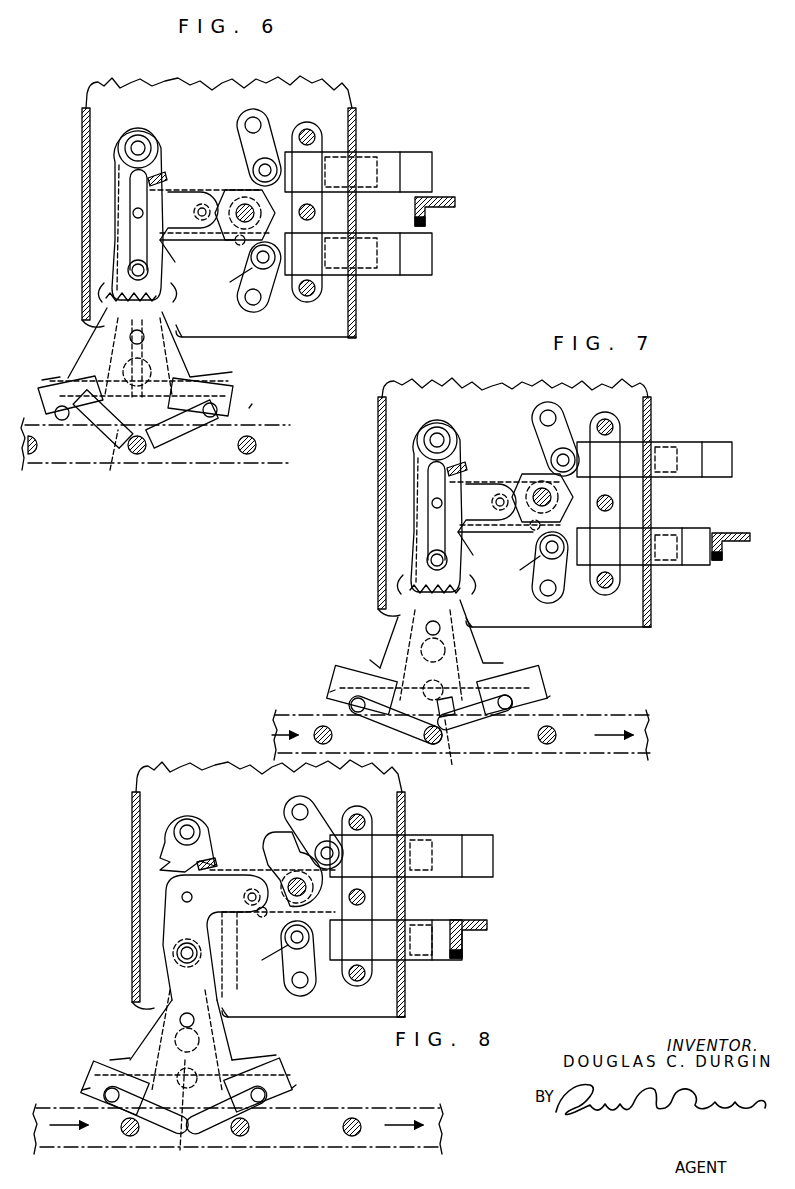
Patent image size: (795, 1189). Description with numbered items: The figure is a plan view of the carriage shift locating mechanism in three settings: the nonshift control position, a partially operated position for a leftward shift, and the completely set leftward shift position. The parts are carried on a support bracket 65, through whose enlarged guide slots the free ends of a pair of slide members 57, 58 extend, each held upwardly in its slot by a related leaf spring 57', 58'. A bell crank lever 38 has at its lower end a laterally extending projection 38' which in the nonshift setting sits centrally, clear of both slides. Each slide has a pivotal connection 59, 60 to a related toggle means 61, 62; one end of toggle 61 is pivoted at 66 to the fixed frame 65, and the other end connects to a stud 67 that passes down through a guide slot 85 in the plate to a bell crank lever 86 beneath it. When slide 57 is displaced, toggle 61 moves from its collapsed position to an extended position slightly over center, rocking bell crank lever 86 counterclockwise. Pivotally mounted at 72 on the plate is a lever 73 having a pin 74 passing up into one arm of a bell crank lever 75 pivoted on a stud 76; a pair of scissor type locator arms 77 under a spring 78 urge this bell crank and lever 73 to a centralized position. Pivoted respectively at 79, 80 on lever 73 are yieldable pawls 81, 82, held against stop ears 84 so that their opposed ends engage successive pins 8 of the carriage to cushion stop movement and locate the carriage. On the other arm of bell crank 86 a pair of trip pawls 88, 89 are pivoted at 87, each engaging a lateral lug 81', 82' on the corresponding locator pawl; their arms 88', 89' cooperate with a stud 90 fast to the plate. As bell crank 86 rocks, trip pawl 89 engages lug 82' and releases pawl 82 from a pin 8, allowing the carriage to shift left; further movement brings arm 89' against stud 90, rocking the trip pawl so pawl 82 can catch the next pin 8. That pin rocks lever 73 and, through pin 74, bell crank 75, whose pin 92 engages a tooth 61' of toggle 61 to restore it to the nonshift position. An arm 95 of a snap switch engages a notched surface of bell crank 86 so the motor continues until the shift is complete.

In FIG. 6, the support bracket 65 is at (340, 75).
In FIG. 7, the support bracket 65 is at (648, 368).
In FIG. 8, the support bracket 65 is at (165, 768).
In FIG. 6, the arm 95 is at (318, 212).
In FIG. 7, the arm 95 is at (614, 503).
In FIG. 8, the arm 95 is at (367, 896).
In FIG. 6, the slide member 58 is at (368, 159).
In FIG. 7, the slide member 58 is at (665, 444).
In FIG. 8, the slide member 58 is at (411, 842).
In FIG. 6, the leaf spring 58' is at (359, 156).
In FIG. 7, the leaf spring 58' is at (671, 442).
In FIG. 8, the leaf spring 58' is at (425, 839).
In FIG. 6, the slide member 57 is at (364, 268).
In FIG. 7, the slide member 57 is at (659, 560).
In FIG. 8, the slide member 57 is at (407, 954).
In FIG. 6, the leaf spring 57' is at (358, 271).
In FIG. 7, the leaf spring 57' is at (669, 562).
In FIG. 8, the leaf spring 57' is at (422, 957).
In FIG. 6, the bell crank lever 38 is at (445, 194).
In FIG. 7, the bell crank lever 38 is at (744, 538).
In FIG. 8, the bell crank lever 38 is at (490, 939).
In FIG. 6, the laterally extending projection 38' is at (445, 219).
In FIG. 7, the laterally extending projection 38' is at (743, 553).
In FIG. 8, the laterally extending projection 38' is at (479, 954).
In FIG. 6, the pivotal connection 60 is at (252, 160).
In FIG. 7, the pivotal connection 60 is at (552, 452).
In FIG. 8, the pivotal connection 60 is at (330, 840).
In FIG. 6, the toggle means 62 is at (278, 170).
In FIG. 7, the toggle means 62 is at (577, 460).
In FIG. 8, the toggle means 62 is at (340, 853).
In FIG. 6, the pivot 66 is at (258, 305).
In FIG. 7, the pivot 66 is at (553, 595).
In FIG. 8, the pivot 66 is at (306, 988).
In FIG. 6, the toggle means 61 is at (289, 257).
In FIG. 7, the toggle means 61 is at (577, 547).
In FIG. 8, the toggle means 61 is at (311, 937).
In FIG. 6, the pivotal connection 59 is at (258, 262).
In FIG. 7, the pivotal connection 59 is at (545, 552).
In FIG. 8, the pivotal connection 59 is at (292, 940).
In FIG. 6, the stud 67 is at (240, 180).
In FIG. 7, the stud 67 is at (540, 470).
In FIG. 8, the stud 67 is at (280, 862).
In FIG. 6, the guide slot 85 is at (240, 225).
In FIG. 7, the guide slot 85 is at (538, 510).
In FIG. 8, the guide slot 85 is at (290, 900).
In FIG. 6, the tooth 61' is at (207, 255).
In FIG. 7, the tooth 61' is at (503, 540).
In FIG. 8, the tooth 61' is at (244, 922).
In FIG. 6, the bell crank lever 86 is at (200, 180).
In FIG. 7, the bell crank lever 86 is at (500, 478).
In FIG. 8, the bell crank lever 86 is at (226, 960).
In FIG. 6, the pin 92 is at (190, 185).
In FIG. 7, the pin 92 is at (488, 480).
In FIG. 8, the pin 92 is at (240, 860).
In FIG. 6, the scissor type locator arms 77 is at (118, 150).
In FIG. 7, the scissor type locator arms 77 is at (418, 440).
In FIG. 8, the scissor type locator arms 77 is at (168, 830).
In FIG. 6, the bell crank lever 75 is at (130, 246).
In FIG. 7, the bell crank lever 75 is at (430, 537).
In FIG. 8, the bell crank lever 75 is at (165, 925).
In FIG. 6, the stud 76 is at (133, 213).
In FIG. 7, the stud 76 is at (432, 506).
In FIG. 8, the stud 76 is at (182, 897).
In FIG. 6, the pin 74 is at (128, 272).
In FIG. 7, the pin 74 is at (427, 562).
In FIG. 8, the pin 74 is at (178, 955).
In FIG. 6, the spring 78 is at (95, 298).
In FIG. 7, the spring 78 is at (400, 588).
In FIG. 6, the pivot 72 is at (146, 318).
In FIG. 7, the pivot 72 is at (448, 608).
In FIG. 8, the pivot 72 is at (204, 1006).
In FIG. 6, the arm 88' is at (194, 325).
In FIG. 7, the arm 88' is at (487, 616).
In FIG. 8, the arm 88' is at (242, 1006).
In FIG. 6, the lever 73 is at (102, 330).
In FIG. 7, the lever 73 is at (392, 618).
In FIG. 8, the lever 73 is at (148, 1002).
In FIG. 6, the stud 90 is at (90, 362).
In FIG. 7, the stud 90 is at (470, 608).
In FIG. 8, the stud 90 is at (228, 1030).
In FIG. 6, the trip pawl 89 is at (196, 353).
In FIG. 7, the trip pawl 89 is at (484, 655).
In FIG. 8, the trip pawl 89 is at (254, 1040).
In FIG. 7, the arm 89' is at (435, 666).
In FIG. 8, the arm 89' is at (187, 1052).
In FIG. 6, the stop ears 84 is at (40, 368).
In FIG. 7, the stop ears 84 is at (340, 668).
In FIG. 8, the stop ears 84 is at (95, 1062).
In FIG. 6, the trip pawl 88 is at (41, 388).
In FIG. 7, the trip pawl 88 is at (366, 657).
In FIG. 8, the trip pawl 88 is at (115, 1048).
In FIG. 7, the lateral lug 81' is at (315, 683).
In FIG. 8, the lateral lug 81' is at (69, 1079).
In FIG. 6, the lateral lug 82' is at (262, 396).
In FIG. 7, the lateral lug 82' is at (562, 693).
In FIG. 8, the lateral lug 82' is at (310, 1081).
In FIG. 6, the yieldable pawl 81 is at (101, 438).
In FIG. 7, the yieldable pawl 81 is at (395, 722).
In FIG. 8, the yieldable pawl 81 is at (139, 1114).
In FIG. 6, the yieldable pawl 82 is at (182, 443).
In FIG. 7, the yieldable pawl 82 is at (475, 721).
In FIG. 8, the yieldable pawl 82 is at (226, 1128).
In FIG. 6, the pivot 87 is at (109, 459).
In FIG. 7, the pivot 87 is at (455, 736).
In FIG. 8, the pivot 87 is at (171, 1114).
In FIG. 6, the pivot 79 is at (62, 422).
In FIG. 7, the pivot 79 is at (350, 703).
In FIG. 8, the pivot 79 is at (104, 1096).
In FIG. 6, the pivot 80 is at (210, 418).
In FIG. 7, the pivot 80 is at (505, 710).
In FIG. 8, the pivot 80 is at (262, 1103).
In FIG. 6, the pins 8 is at (137, 455).
In FIG. 7, the pins 8 is at (433, 745).
In FIG. 8, the pins 8 is at (130, 1137).